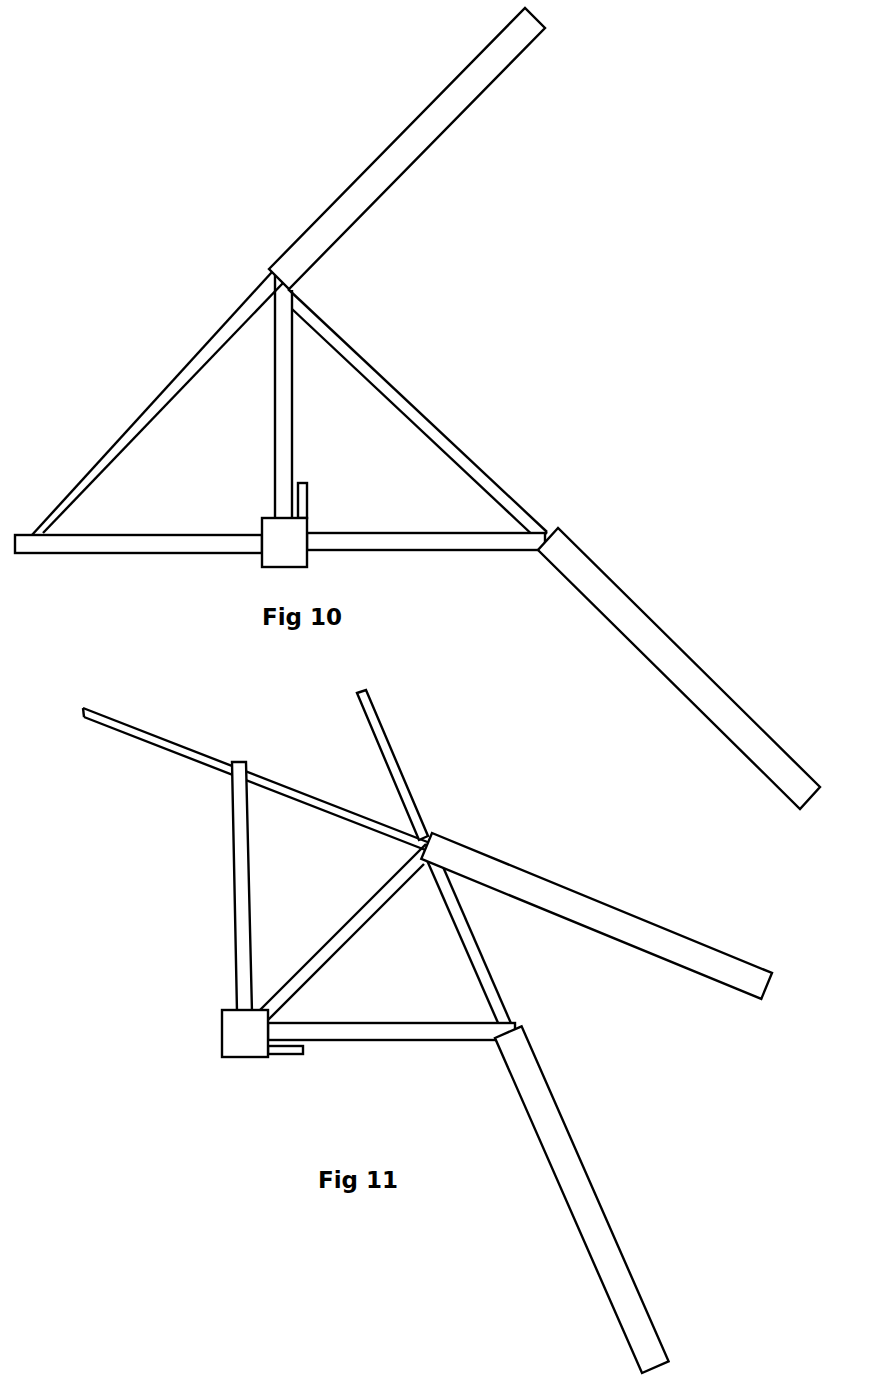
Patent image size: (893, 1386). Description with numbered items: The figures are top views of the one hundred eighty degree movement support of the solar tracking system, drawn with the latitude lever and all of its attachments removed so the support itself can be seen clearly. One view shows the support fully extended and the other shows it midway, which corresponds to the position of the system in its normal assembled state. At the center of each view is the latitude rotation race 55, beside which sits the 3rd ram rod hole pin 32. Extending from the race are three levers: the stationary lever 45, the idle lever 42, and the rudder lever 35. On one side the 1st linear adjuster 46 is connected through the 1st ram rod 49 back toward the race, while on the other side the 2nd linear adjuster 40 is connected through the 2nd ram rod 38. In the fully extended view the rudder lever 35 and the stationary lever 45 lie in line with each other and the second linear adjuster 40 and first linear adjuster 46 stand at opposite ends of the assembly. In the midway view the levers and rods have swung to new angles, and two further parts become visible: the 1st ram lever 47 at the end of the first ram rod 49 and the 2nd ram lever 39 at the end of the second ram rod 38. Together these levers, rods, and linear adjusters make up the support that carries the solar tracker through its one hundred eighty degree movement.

In FIG. 10, the 3rd ram rod hole pin 32 is at (310, 490).
In FIG. 11, the 3rd ram rod hole pin 32 is at (290, 1055).
In FIG. 10, the rudder lever 35 is at (150, 545).
In FIG. 11, the rudder lever 35 is at (242, 888).
In FIG. 10, the 2nd ram rod 38 is at (198, 368).
In FIG. 11, the 2nd ram rod 38 is at (285, 790).
In FIG. 11, the 2nd ram lever 39 is at (130, 725).
In FIG. 10, the 2nd linear adjuster 40 is at (432, 115).
In FIG. 11, the 2nd linear adjuster 40 is at (562, 885).
In FIG. 10, the idle lever 42 is at (283, 447).
In FIG. 11, the idle lever 42 is at (363, 907).
In FIG. 10, the stationary lever 45 is at (426, 541).
In FIG. 11, the stationary lever 45 is at (393, 1032).
In FIG. 10, the 1st linear adjuster 46 is at (645, 632).
In FIG. 11, the 1st linear adjuster 46 is at (565, 1150).
In FIG. 11, the 1st ram lever 47 is at (385, 747).
In FIG. 10, the 1st ram rod 49 is at (390, 383).
In FIG. 11, the 1st ram rod 49 is at (475, 955).
In FIG. 10, the latitude rotation race 55 is at (267, 527).
In FIG. 11, the latitude rotation race 55 is at (233, 1037).